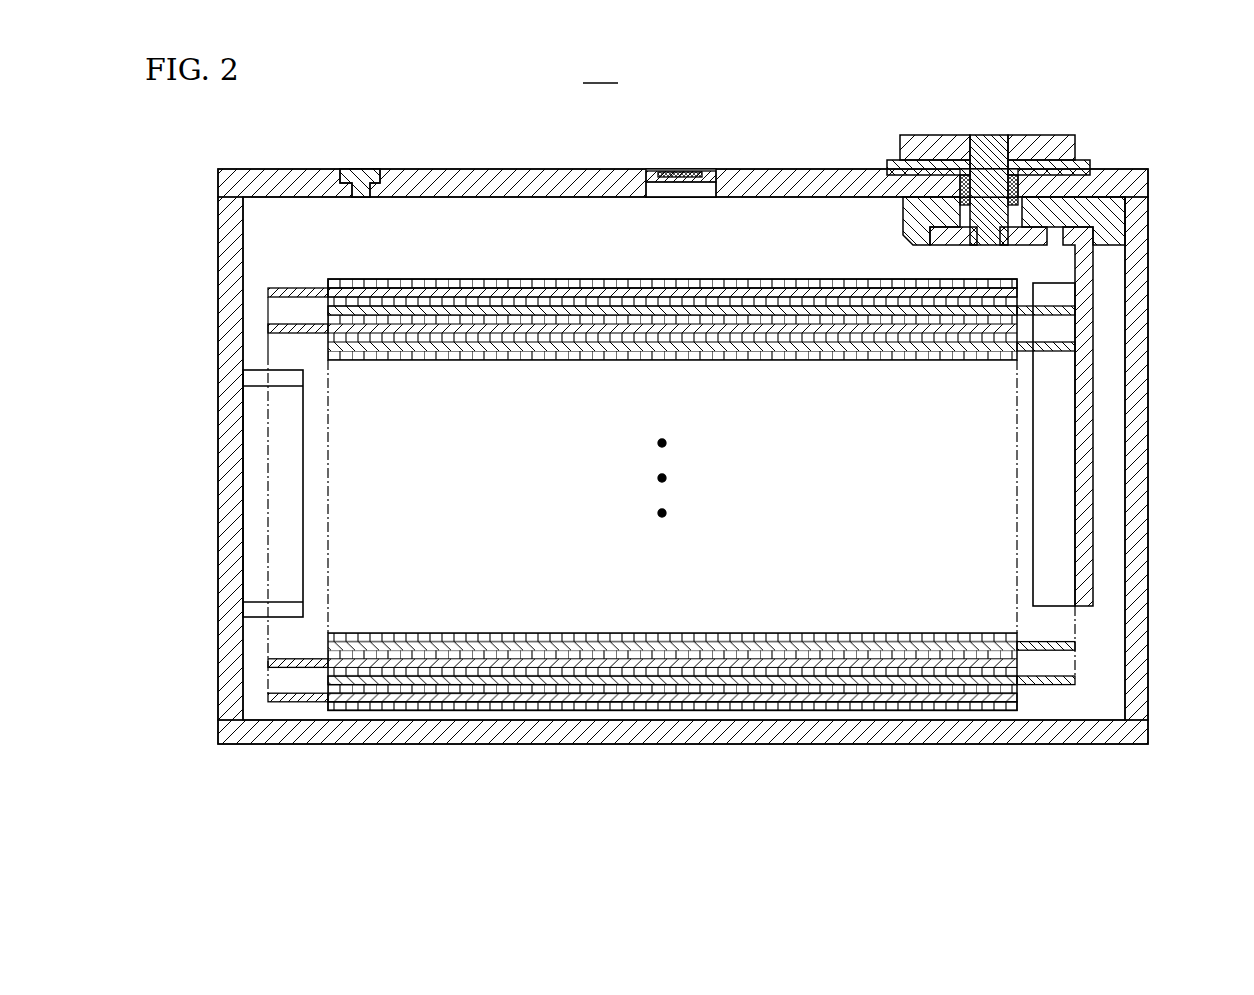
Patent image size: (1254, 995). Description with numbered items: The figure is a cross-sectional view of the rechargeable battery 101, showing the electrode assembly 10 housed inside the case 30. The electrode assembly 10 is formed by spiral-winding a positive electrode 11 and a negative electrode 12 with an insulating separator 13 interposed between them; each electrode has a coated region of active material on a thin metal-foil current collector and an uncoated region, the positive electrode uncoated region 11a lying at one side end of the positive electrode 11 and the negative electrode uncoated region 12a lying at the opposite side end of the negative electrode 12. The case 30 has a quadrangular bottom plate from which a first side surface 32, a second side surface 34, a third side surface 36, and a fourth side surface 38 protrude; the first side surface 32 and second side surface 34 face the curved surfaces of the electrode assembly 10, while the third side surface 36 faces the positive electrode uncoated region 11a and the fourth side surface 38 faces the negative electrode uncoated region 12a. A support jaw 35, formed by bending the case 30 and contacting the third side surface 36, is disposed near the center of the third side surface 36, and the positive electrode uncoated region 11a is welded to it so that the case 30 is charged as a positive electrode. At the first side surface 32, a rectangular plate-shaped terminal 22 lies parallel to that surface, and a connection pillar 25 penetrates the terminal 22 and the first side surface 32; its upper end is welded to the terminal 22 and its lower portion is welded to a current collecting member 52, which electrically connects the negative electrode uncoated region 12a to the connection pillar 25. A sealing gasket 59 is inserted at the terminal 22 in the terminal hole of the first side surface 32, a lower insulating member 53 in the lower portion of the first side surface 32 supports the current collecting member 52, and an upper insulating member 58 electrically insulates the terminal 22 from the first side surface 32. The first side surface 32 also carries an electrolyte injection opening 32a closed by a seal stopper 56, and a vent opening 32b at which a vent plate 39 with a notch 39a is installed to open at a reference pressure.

The rechargeable battery 101 is at (603, 71).
The electrode assembly 10 is at (671, 541).
The positive electrode 11 is at (393, 703).
The positive electrode uncoated region 11a is at (297, 700).
The negative electrode 12 is at (955, 680).
The negative electrode uncoated region 12a is at (1050, 688).
The separator 13 is at (681, 672).
The terminal 22 is at (1040, 142).
The connection pillar 25 is at (990, 148).
The case 30 is at (704, 455).
The first side surface 32 is at (497, 178).
The electrolyte injection opening 32a is at (355, 153).
The vent opening 32b is at (684, 190).
The second side surface 34 is at (487, 728).
The support jaw 35 is at (253, 508).
The third side surface 36 is at (228, 445).
The fourth side surface 38 is at (1148, 472).
The vent plate 39 is at (691, 182).
The notch 39a is at (677, 172).
The current collecting member 52 is at (1085, 400).
The lower insulating member 53 is at (1105, 205).
The seal stopper 56 is at (372, 182).
The upper insulating member 58 is at (1085, 168).
The sealing gasket 59 is at (963, 180).